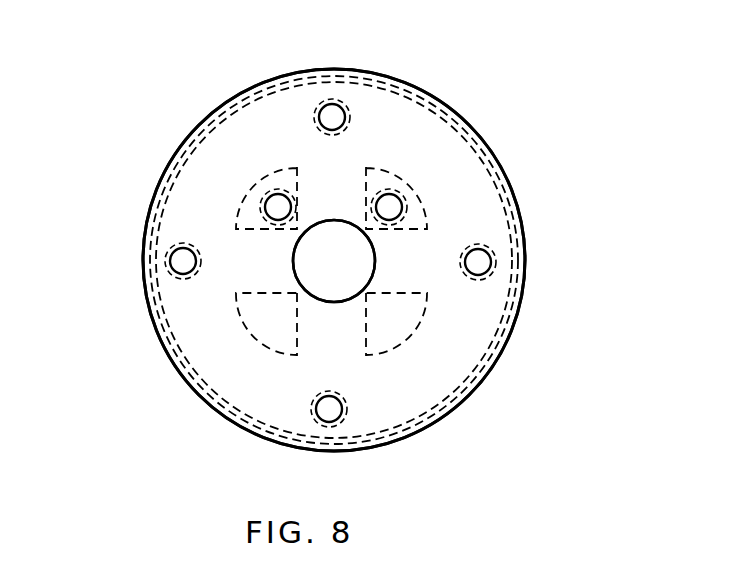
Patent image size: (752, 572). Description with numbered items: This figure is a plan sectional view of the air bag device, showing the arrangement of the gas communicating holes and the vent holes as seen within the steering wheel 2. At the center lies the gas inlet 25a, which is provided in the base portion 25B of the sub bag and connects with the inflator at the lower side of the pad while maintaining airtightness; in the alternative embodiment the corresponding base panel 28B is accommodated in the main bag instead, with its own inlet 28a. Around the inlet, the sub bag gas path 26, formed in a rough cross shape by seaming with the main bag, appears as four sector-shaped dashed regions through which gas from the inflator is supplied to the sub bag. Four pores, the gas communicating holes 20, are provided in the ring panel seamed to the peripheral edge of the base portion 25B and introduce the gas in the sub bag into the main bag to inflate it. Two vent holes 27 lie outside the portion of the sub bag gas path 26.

The steering wheel 2 is at (332, 117).
The gas communicating holes 20 is at (478, 262).
The gas inlet 25a is at (300, 267).
The central opening 28a is at (334, 261).
The base portion 25B is at (488, 210).
The base panel 28B is at (334, 260).
The sub bag gas path 26 is at (348, 170).
The vent holes 27 is at (279, 206).